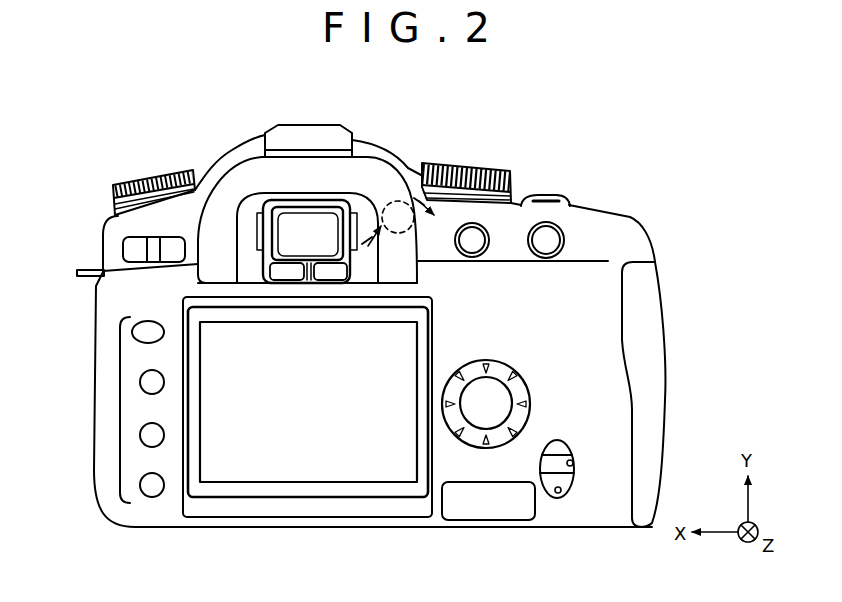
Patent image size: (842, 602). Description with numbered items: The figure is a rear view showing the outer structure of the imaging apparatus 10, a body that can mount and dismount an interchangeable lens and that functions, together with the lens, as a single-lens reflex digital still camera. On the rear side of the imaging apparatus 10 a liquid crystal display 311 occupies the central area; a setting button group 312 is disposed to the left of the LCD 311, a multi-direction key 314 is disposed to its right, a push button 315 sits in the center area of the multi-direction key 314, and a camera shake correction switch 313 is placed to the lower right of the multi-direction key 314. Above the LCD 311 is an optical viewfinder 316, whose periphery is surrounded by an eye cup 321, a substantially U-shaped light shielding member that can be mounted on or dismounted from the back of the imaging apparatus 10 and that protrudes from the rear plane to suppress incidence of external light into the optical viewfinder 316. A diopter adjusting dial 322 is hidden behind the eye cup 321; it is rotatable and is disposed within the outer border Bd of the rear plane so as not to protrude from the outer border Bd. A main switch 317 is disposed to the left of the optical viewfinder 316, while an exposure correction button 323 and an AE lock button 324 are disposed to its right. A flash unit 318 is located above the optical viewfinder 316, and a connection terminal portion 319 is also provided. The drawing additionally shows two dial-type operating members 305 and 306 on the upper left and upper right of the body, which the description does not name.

The imaging apparatus 10 is at (116, 180).
The outer border Bd is at (413, 168).
The dial 305 is at (471, 163).
The mode dial 306 is at (150, 180).
The liquid crystal display 311 is at (302, 468).
The setting button group 312 is at (118, 408).
The camera shake correction switch 313 is at (555, 502).
The multi-direction key 314 is at (492, 372).
The push button 315 is at (495, 398).
The optical viewfinder 316 is at (330, 227).
The main switch 317 is at (123, 247).
The flash unit 318 is at (253, 140).
The connection terminal portion 319 is at (316, 123).
The eye cup 321 is at (232, 185).
The diopter adjusting dial 322 is at (418, 250).
The exposure correction button 323 is at (472, 242).
The AE lock button 324 is at (547, 240).